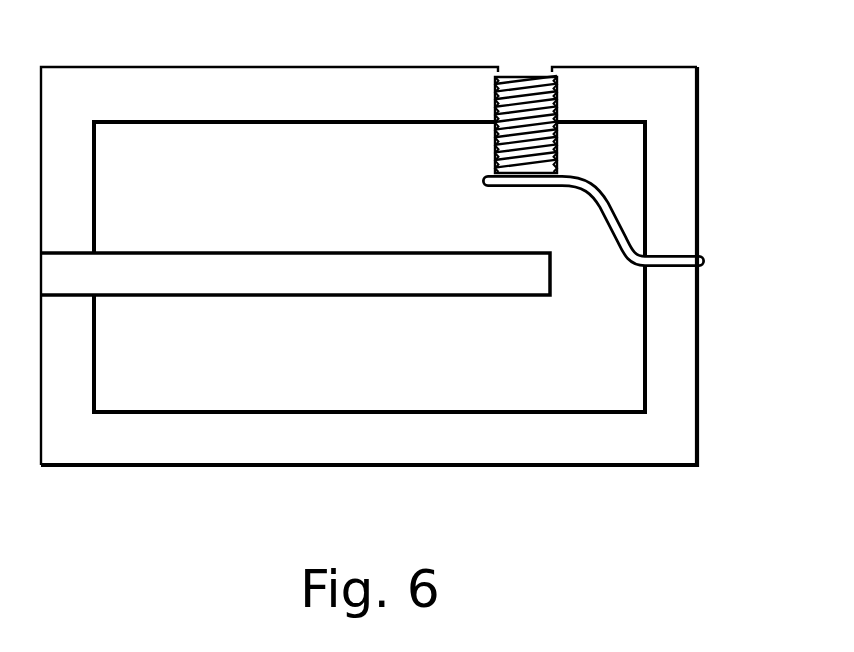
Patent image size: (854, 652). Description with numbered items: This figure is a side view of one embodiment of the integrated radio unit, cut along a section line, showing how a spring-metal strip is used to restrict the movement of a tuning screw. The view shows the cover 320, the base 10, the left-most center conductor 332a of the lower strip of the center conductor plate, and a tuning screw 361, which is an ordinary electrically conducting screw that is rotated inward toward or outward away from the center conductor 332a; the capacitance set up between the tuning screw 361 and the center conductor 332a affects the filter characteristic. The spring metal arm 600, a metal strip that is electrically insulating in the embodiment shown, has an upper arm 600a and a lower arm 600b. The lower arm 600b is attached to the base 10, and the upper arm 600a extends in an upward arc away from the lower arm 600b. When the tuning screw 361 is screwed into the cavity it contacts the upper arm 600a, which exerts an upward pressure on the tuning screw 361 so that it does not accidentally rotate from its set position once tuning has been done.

The base 10 is at (442, 467).
The cover 320 is at (406, 67).
The center conductor 332a is at (350, 297).
The tuning screw 361 is at (526, 77).
The spring metal arm 600 is at (620, 215).
The upper arm 600a is at (533, 190).
The lower arm 600b is at (627, 268).